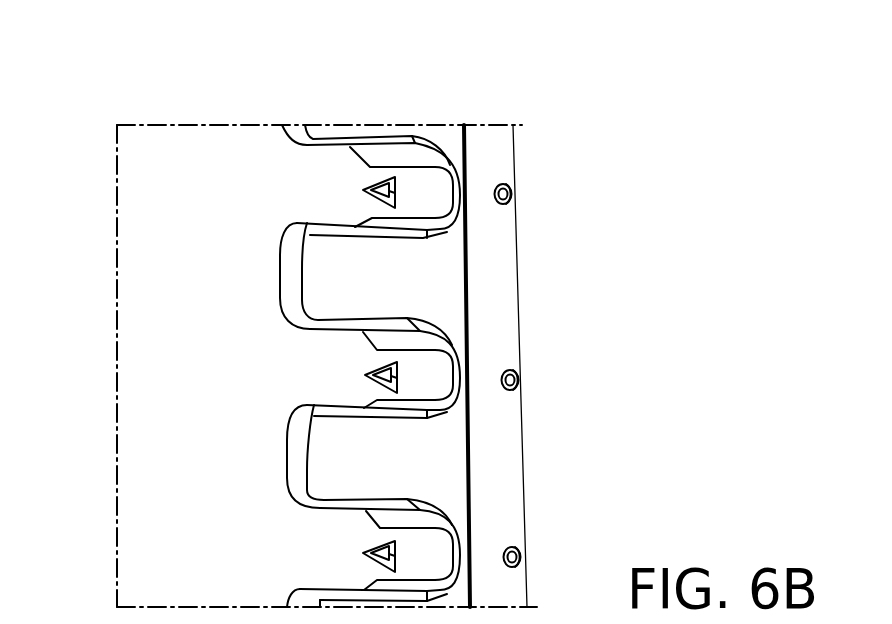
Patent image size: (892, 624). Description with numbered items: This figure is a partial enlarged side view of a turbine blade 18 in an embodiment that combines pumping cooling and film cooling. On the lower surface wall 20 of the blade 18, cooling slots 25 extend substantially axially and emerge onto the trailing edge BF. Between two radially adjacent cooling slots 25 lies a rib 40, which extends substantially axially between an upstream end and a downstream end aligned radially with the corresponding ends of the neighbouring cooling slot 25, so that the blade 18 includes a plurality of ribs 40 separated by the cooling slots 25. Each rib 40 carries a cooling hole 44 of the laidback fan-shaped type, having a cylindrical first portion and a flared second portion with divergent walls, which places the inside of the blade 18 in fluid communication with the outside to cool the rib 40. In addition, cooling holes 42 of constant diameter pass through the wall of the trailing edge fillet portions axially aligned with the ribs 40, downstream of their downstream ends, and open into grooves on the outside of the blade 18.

The blade 18 is at (244, 110).
The lower surface wall 20 is at (147, 265).
The cooling slot 25 is at (423, 273).
The rib 40 is at (343, 353).
The cooling hole 42 is at (513, 192).
The cooling hole 44 is at (379, 183).
The trailing edge BF is at (510, 328).